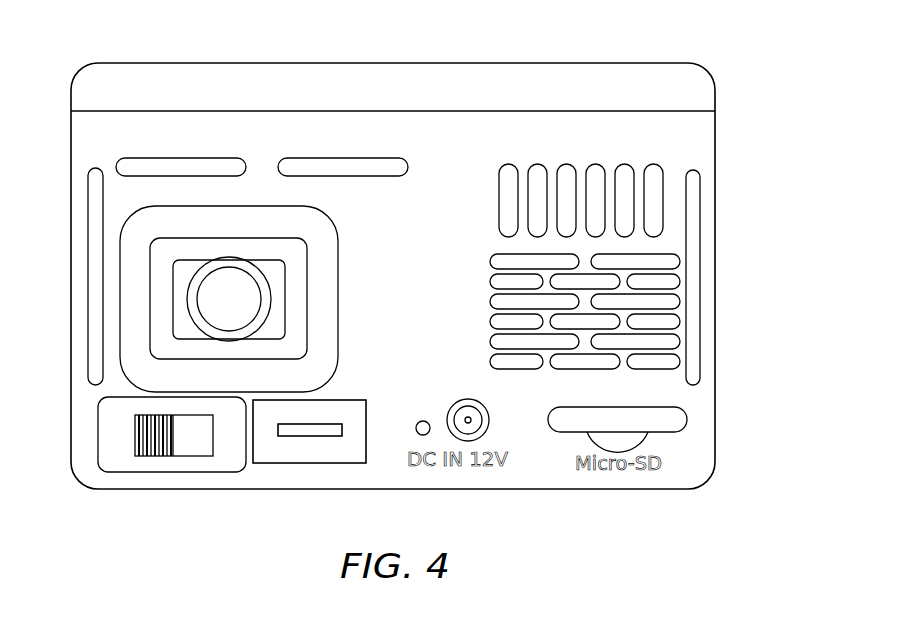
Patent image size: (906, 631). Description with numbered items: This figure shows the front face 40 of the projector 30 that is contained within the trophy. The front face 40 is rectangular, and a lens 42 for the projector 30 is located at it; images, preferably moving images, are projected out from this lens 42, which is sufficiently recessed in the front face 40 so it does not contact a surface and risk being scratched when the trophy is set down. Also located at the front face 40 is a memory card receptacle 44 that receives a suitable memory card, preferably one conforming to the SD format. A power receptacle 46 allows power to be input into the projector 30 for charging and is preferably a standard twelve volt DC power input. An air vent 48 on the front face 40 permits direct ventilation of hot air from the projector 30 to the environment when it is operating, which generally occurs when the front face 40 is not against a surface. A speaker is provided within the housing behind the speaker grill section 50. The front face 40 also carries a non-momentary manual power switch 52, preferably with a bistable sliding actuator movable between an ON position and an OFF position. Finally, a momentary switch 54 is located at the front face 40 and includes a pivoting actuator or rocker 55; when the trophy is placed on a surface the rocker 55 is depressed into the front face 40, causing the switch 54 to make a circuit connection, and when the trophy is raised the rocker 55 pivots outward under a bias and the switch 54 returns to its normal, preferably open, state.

The projector 30 is at (445, 63).
The front face 40 is at (695, 130).
The lens 42 is at (202, 299).
The memory card receptacle 44 is at (687, 420).
The power receptacle 46 is at (485, 419).
The air vent 48 is at (635, 197).
The speaker grill section 50 is at (622, 321).
The non-momentary manual power switch 52 is at (148, 452).
The momentary switch 54 is at (266, 463).
The rocker 55 is at (309, 430).